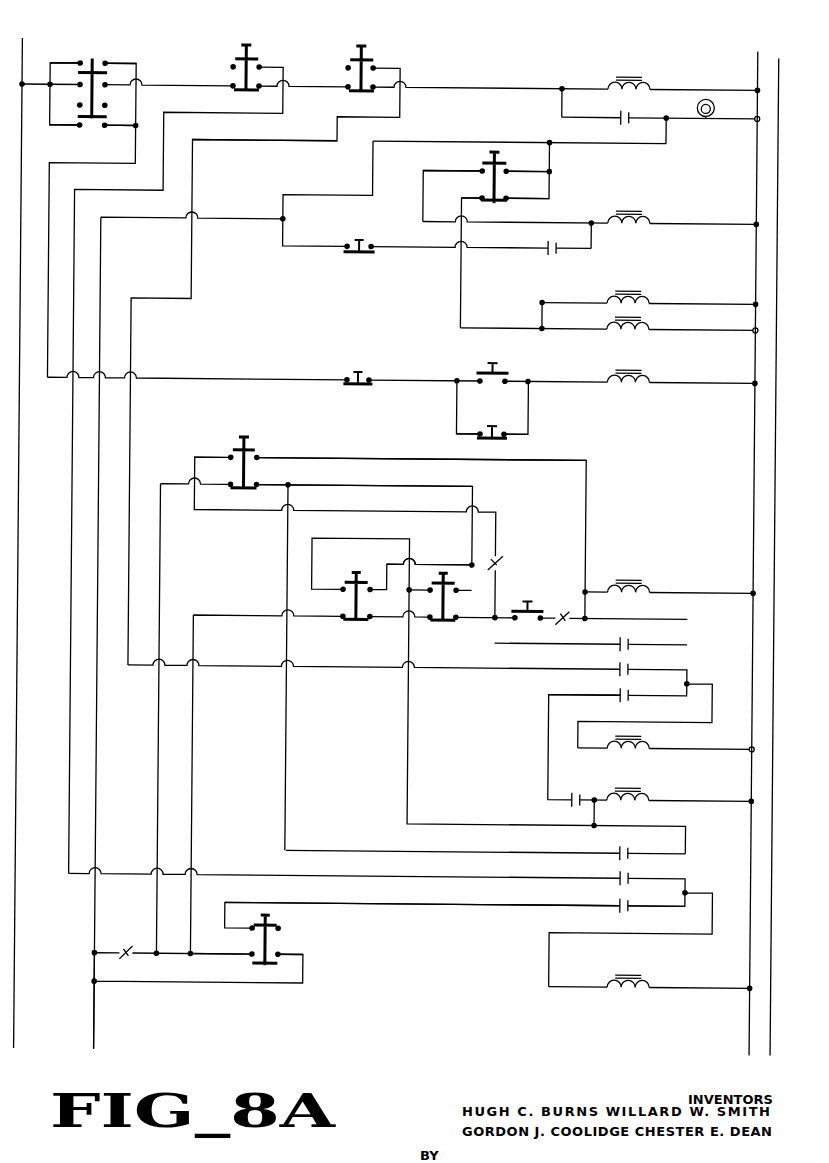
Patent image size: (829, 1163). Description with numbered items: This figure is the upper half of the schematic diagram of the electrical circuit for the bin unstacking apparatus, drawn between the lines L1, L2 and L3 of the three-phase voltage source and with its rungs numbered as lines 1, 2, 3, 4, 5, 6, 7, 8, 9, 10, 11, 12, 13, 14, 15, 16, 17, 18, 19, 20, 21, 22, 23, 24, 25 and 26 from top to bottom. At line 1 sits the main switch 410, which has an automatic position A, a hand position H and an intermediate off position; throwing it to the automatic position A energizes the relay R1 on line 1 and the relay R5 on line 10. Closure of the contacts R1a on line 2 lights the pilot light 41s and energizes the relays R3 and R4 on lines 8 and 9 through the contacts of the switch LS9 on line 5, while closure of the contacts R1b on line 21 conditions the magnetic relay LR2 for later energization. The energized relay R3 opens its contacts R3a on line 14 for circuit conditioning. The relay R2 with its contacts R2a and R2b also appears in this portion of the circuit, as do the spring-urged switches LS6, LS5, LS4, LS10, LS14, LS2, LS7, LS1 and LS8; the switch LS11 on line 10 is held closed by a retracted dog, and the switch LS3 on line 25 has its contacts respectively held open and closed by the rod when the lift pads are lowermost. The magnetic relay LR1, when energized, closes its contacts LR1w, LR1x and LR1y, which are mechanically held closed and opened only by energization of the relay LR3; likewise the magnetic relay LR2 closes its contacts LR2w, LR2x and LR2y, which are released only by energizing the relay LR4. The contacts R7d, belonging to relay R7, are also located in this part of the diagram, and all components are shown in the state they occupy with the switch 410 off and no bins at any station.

The line L1 is at (22, 42).
The line L2 is at (757, 55).
The line L3 is at (778, 52).
The main switch 410 is at (92, 57).
The hand position H is at (93, 50).
The automatic position A is at (92, 135).
The switch LS6 is at (252, 44).
The switch LS5 is at (367, 44).
The relay R1 is at (612, 82).
The contacts R1a is at (620, 120).
The signal lamp 41s is at (697, 106).
The switch LS9 is at (489, 152).
The relay R2 is at (645, 216).
The switch LS4 is at (356, 240).
The contacts R2a is at (548, 248).
The relay R3 is at (648, 296).
The relay R4 is at (650, 324).
The switch LS10 is at (357, 370).
The switch LS11 is at (487, 366).
The relay R5 is at (651, 376).
The switch LS14 is at (495, 422).
The switch LS2 is at (252, 446).
The contacts R3a is at (503, 555).
The switch LS7 is at (354, 574).
The switch LS1 is at (520, 606).
The magnetic relay LR1 is at (651, 585).
The switch LS8 is at (450, 620).
The contacts R2b is at (571, 622).
The contacts LR1w is at (622, 645).
The contacts LR1x is at (621, 670).
The contacts LR1y is at (621, 696).
The magnetic relay LR3 is at (652, 748).
The contacts R1b is at (576, 798).
The magnetic relay LR2 is at (652, 800).
The contacts LR2w is at (622, 850).
The contacts LR2x is at (622, 874).
The contacts LR2y is at (622, 900).
The switch LS3 is at (268, 963).
The contacts R7d is at (125, 946).
The magnetic relay LR4 is at (652, 980).
The line 1 is at (413, 87).
The line 2 is at (685, 120).
The line 3 is at (499, 143).
The line 4 is at (615, 173).
The line 5 is at (633, 199).
The line 6 is at (615, 226).
The line 7 is at (588, 252).
The line 8 is at (672, 305).
The line 9 is at (632, 330).
The line 10 is at (429, 381).
The line 11 is at (633, 435).
The line 12 is at (534, 463).
The line 13 is at (533, 524).
The line 14 is at (599, 568).
The line 15 is at (696, 596).
The line 16 is at (633, 620).
The line 17 is at (652, 645).
The line 18 is at (469, 672).
The line 19 is at (679, 697).
The line 20 is at (693, 751).
The line 21 is at (694, 812).
The line 22 is at (547, 854).
The line 23 is at (437, 880).
The line 24 is at (516, 907).
The line 25 is at (498, 959).
The line 26 is at (678, 991).